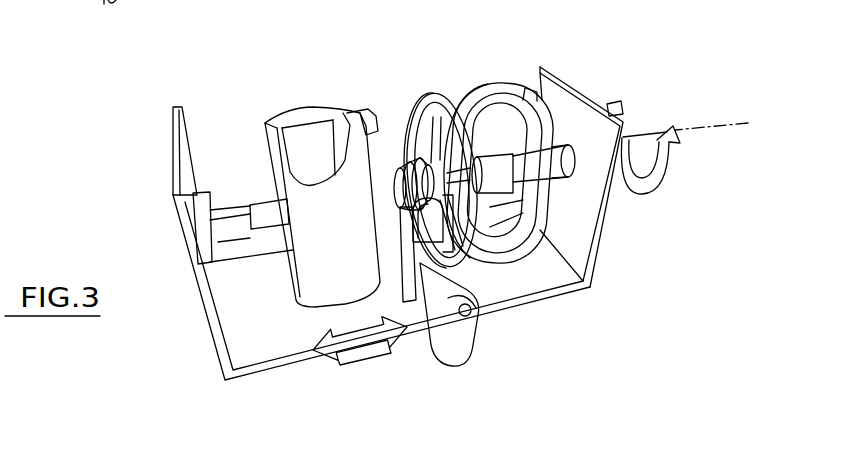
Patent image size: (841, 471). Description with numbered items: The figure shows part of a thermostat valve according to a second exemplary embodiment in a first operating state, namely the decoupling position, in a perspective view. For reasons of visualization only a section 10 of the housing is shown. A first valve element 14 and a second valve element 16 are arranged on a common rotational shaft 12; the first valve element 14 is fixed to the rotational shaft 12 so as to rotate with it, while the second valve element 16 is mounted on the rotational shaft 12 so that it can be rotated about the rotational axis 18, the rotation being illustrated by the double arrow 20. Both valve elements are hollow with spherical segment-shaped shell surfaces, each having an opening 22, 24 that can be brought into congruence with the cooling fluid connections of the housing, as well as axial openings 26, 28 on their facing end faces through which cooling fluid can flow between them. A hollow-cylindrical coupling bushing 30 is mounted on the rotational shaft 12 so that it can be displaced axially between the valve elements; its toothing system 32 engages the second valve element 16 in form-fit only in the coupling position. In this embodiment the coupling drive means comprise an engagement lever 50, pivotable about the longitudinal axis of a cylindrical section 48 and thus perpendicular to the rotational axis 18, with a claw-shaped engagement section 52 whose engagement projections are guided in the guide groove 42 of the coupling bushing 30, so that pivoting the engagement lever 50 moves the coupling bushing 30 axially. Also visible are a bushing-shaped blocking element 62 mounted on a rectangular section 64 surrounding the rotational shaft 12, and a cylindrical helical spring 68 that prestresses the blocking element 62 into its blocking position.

The section of the housing 10 is at (283, 347).
The rotational shaft 12 is at (640, 140).
The first valve element 14 is at (493, 258).
The second valve element 16 is at (277, 127).
The rotational axis 18 is at (719, 122).
The double arrow 20 is at (667, 187).
The opening 22 is at (500, 108).
The opening 24 is at (307, 117).
The axial opening 26 is at (435, 125).
The axial opening 28 is at (332, 147).
The coupling bushing 30 is at (388, 180).
The toothing system 32 is at (381, 175).
The guide groove 42 is at (457, 150).
The cylindrical section 48 is at (433, 297).
The engagement lever 50 is at (398, 332).
The claw-shaped engagement section 52 is at (453, 243).
The blocking element 62 is at (263, 205).
The rectangular section 64 is at (232, 210).
The cylindrical helical spring 68 is at (217, 258).